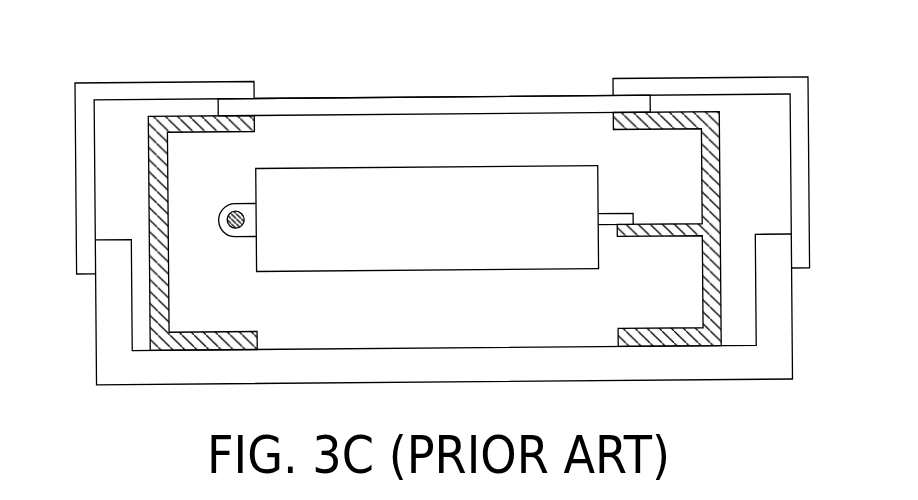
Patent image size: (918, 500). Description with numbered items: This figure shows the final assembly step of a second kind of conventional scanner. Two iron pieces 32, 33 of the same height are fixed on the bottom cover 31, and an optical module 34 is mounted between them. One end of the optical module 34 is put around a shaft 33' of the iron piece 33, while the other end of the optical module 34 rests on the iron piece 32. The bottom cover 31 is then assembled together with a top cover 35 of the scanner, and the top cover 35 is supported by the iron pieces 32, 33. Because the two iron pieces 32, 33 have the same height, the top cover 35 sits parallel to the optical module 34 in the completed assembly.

The bottom cover 31 is at (669, 382).
The iron piece 32 is at (705, 167).
The iron piece 33 is at (132, 232).
The shaft 33' is at (237, 189).
The optical module 34 is at (438, 177).
The top cover 35 is at (178, 70).